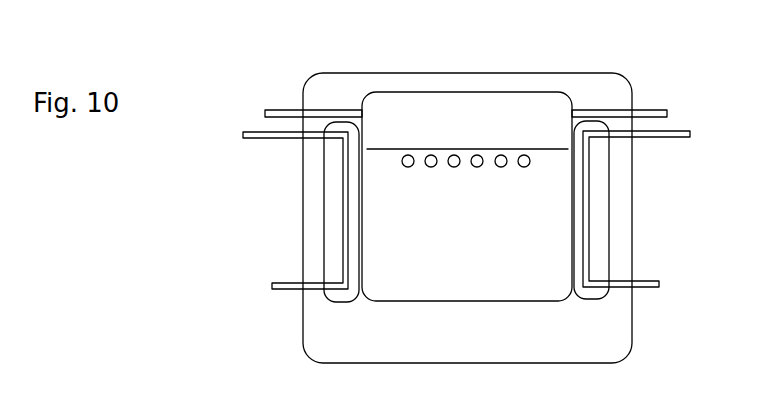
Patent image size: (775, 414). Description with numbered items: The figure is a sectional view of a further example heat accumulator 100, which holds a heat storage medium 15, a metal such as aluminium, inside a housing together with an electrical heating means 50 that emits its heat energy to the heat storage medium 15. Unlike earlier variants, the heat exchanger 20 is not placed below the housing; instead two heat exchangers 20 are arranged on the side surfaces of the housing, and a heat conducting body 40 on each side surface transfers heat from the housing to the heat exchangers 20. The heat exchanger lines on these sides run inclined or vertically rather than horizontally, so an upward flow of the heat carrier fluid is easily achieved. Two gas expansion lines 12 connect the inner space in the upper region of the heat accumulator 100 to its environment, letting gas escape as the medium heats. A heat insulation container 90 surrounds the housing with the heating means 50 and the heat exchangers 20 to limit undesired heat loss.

The heat accumulator 100 is at (637, 370).
The heat insulation container 90 is at (496, 348).
The heat storage medium 15 is at (488, 255).
The electrical heating means 50 is at (408, 167).
The heat conducting body 40 is at (330, 235).
The heat exchanger 20 is at (273, 290).
The gas expansion line 12 is at (267, 110).